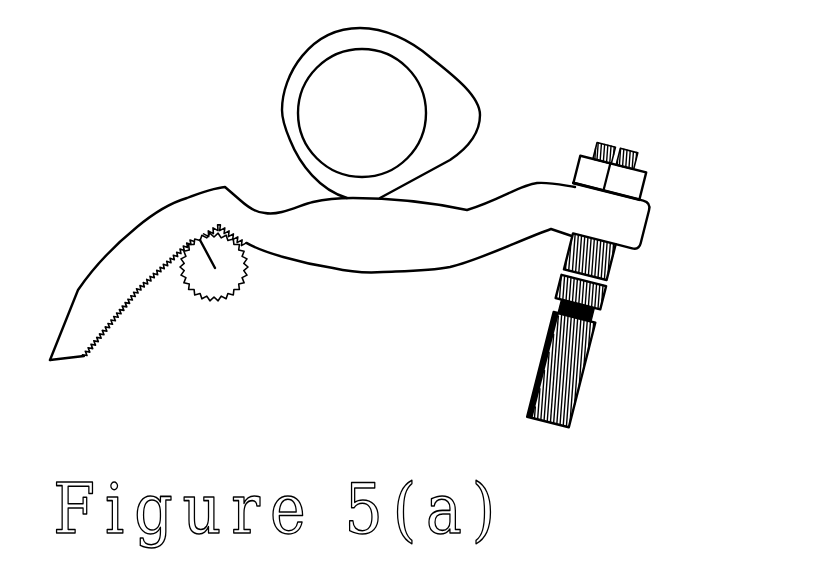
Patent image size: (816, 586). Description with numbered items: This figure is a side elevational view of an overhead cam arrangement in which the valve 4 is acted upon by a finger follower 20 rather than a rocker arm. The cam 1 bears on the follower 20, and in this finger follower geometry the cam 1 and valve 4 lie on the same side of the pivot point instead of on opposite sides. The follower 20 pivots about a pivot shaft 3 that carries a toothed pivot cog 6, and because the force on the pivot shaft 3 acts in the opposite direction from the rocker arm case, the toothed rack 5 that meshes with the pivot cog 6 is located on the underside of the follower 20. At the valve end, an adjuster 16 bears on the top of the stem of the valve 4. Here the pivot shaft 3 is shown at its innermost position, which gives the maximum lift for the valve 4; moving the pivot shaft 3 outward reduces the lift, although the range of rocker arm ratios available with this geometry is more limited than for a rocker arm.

The cam 1 is at (435, 82).
The pivot shaft 3 is at (200, 275).
The valve 4 is at (582, 385).
The toothed rack 5 is at (138, 294).
The toothed pivot cog 6 is at (245, 257).
The adjuster 16 is at (635, 152).
The follower 20 is at (352, 240).